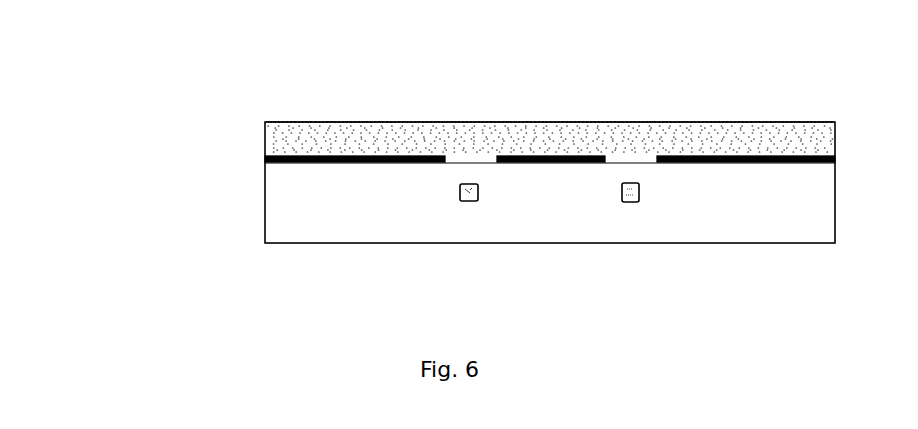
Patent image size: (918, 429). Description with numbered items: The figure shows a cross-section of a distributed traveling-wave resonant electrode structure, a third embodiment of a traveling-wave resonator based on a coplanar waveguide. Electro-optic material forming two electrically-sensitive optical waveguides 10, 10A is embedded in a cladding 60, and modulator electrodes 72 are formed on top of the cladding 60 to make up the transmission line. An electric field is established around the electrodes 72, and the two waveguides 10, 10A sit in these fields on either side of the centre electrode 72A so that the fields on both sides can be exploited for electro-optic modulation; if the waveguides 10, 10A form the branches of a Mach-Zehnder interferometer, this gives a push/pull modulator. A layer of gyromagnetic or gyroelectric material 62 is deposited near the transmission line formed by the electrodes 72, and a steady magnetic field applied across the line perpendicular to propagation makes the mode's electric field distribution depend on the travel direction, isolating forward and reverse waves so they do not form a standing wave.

The electro-optic material 10 is at (448, 188).
The optical waveguide 10A is at (629, 208).
The cladding 60 is at (297, 228).
The gyromagnetic or gyroelectric material layer 62 is at (300, 133).
The modulator electrodes 72 is at (263, 157).
The centre electrode 72A is at (551, 141).